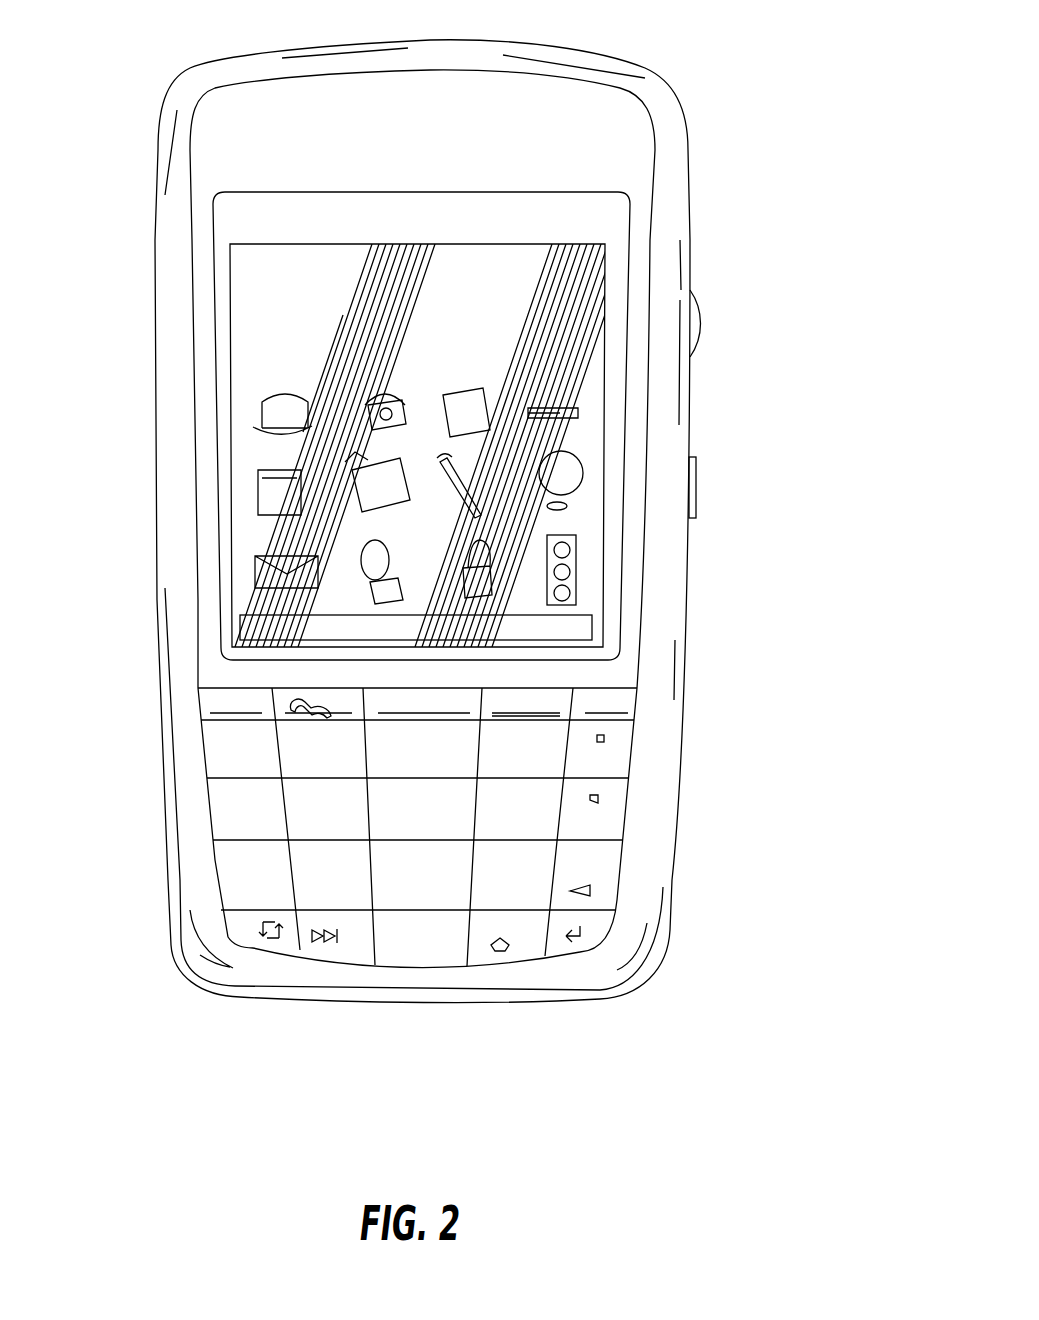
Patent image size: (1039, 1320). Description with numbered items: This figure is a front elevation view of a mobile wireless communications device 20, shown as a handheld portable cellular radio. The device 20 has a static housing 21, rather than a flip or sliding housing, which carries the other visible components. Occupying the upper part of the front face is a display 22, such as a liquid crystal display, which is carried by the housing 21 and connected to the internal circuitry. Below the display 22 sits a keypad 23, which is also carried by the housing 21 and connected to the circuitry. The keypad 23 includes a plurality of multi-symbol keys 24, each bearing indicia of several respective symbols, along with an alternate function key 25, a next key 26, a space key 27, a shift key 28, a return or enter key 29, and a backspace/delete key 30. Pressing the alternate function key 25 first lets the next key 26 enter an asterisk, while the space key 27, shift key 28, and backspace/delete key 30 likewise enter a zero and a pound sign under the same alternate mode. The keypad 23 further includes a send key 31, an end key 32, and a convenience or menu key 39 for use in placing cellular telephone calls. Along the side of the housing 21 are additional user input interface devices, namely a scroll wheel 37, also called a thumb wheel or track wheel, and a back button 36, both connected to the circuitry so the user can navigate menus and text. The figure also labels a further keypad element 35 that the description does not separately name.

The mobile wireless communications device 20 is at (752, 43).
The housing 21 is at (210, 80).
The display 22 is at (245, 355).
The keypad 23 is at (656, 745).
The multi-symbol keys 24 is at (223, 807).
The alternate function key 25 is at (247, 930).
The next key 26 is at (317, 953).
The space key 27 is at (410, 966).
The shift key 28 is at (523, 952).
The return key 29 is at (597, 925).
The backspace/delete key 30 is at (612, 870).
The send key 31 is at (283, 702).
The end key 32 is at (533, 703).
The backspace key 35 is at (612, 808).
The back button 36 is at (697, 490).
The scroll wheel 37 is at (697, 320).
The convenience key 39 is at (433, 740).